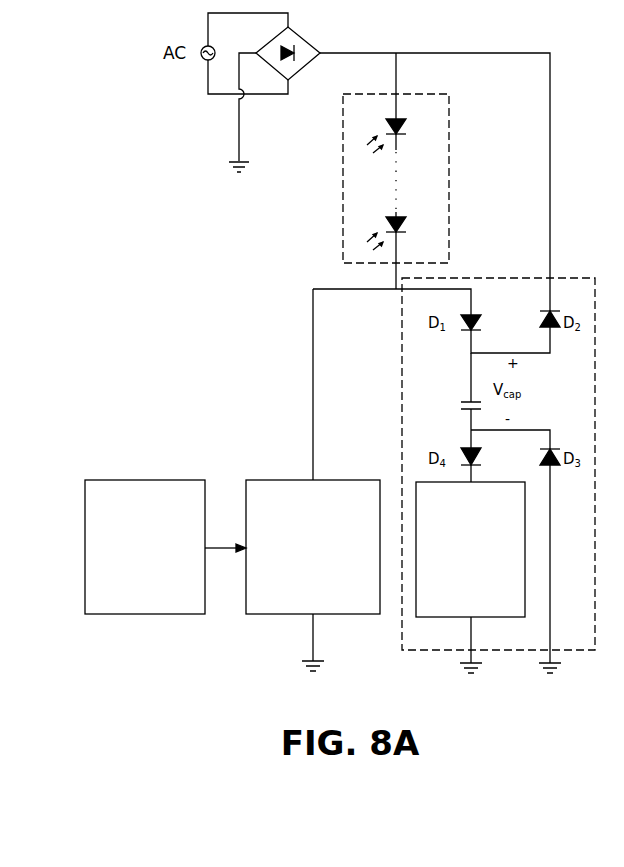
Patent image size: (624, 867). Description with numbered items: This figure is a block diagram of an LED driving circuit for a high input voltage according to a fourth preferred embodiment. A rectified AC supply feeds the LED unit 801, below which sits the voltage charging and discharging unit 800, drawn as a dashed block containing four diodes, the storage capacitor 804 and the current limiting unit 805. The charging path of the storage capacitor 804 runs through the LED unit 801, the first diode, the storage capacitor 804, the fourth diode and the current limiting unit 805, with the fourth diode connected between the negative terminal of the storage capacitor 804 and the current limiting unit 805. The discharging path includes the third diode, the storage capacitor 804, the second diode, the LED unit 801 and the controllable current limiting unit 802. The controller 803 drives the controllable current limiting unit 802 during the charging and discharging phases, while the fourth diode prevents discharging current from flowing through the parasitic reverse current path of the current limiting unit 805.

The voltage charging and discharging unit 800 is at (496, 278).
The LED unit 801 is at (342, 177).
The controllable current limiting unit 802 is at (280, 478).
The controller 803 is at (145, 478).
The storage capacitor 804 is at (462, 397).
The current limiting unit 805 is at (415, 481).